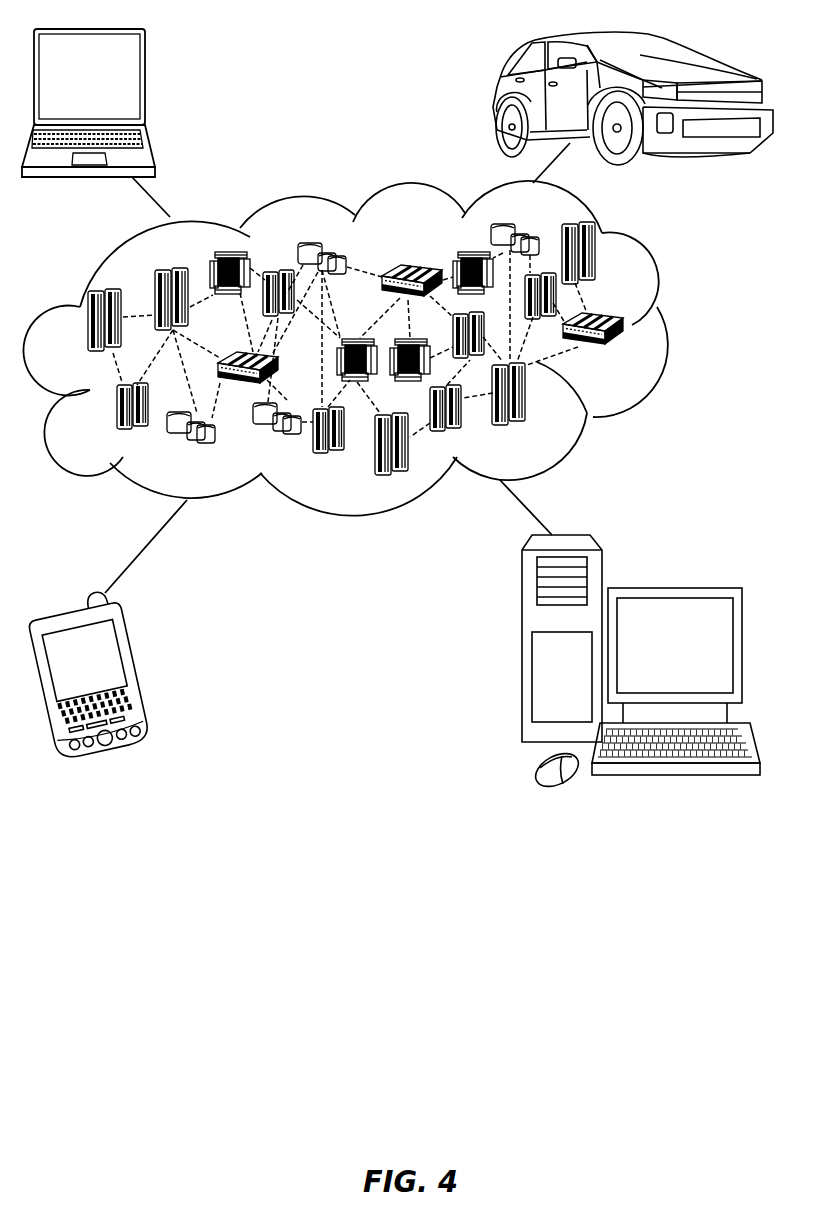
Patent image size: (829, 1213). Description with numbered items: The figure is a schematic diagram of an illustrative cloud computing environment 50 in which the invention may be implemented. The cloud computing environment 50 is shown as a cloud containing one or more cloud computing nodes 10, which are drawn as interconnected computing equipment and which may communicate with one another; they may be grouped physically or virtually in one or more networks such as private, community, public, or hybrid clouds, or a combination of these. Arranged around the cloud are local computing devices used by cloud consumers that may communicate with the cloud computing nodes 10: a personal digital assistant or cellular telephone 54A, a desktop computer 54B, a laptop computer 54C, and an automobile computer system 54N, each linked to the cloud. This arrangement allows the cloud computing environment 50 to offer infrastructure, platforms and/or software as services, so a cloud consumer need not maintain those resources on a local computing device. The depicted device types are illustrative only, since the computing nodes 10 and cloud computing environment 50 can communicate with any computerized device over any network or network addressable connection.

The cloud computing environment 50 is at (672, 330).
The cloud computing nodes 10 is at (630, 362).
The personal digital assistant or cellular telephone 54A is at (137, 672).
The desktop computer 54B is at (673, 588).
The laptop computer 54C is at (145, 83).
The automobile computer system 54N is at (497, 98).